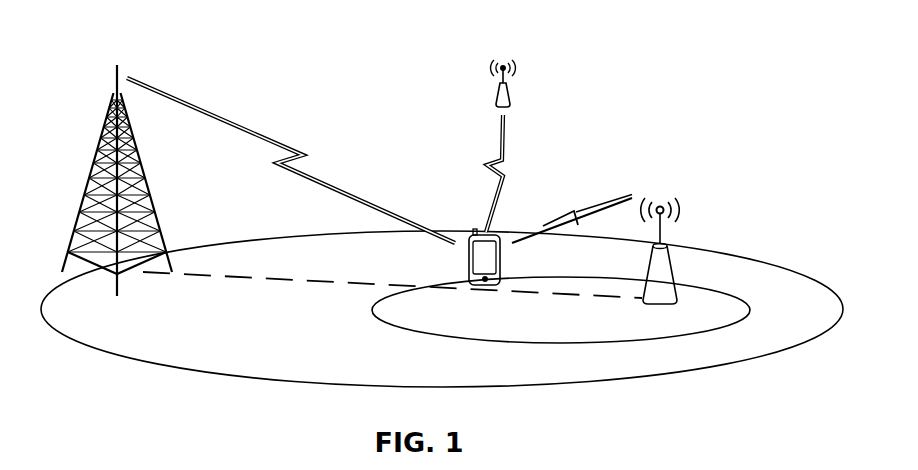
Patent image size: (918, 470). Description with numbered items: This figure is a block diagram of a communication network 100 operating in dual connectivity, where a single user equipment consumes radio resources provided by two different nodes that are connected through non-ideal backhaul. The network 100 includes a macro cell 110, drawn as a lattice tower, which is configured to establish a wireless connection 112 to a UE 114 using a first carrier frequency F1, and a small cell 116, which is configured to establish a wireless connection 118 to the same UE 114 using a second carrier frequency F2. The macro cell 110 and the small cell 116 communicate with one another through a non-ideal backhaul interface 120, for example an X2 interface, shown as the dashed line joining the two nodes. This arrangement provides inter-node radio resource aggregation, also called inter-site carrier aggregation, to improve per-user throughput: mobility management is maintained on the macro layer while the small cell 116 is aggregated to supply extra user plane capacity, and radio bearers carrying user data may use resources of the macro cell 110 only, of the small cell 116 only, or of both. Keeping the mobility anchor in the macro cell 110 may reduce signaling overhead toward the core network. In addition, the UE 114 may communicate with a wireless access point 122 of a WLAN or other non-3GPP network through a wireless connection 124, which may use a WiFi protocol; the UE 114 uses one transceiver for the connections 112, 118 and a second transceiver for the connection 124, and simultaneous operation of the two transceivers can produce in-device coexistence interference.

The communication network 100 is at (197, 25).
The macro cell 110 is at (100, 152).
The wireless connection 112 is at (273, 142).
The UE 114 is at (483, 233).
The small cell 116 is at (673, 263).
The wireless connection 118 is at (578, 225).
The non-ideal backhaul interface 120 is at (335, 284).
The wireless access point 122 is at (510, 90).
The wireless connection 124 is at (504, 172).